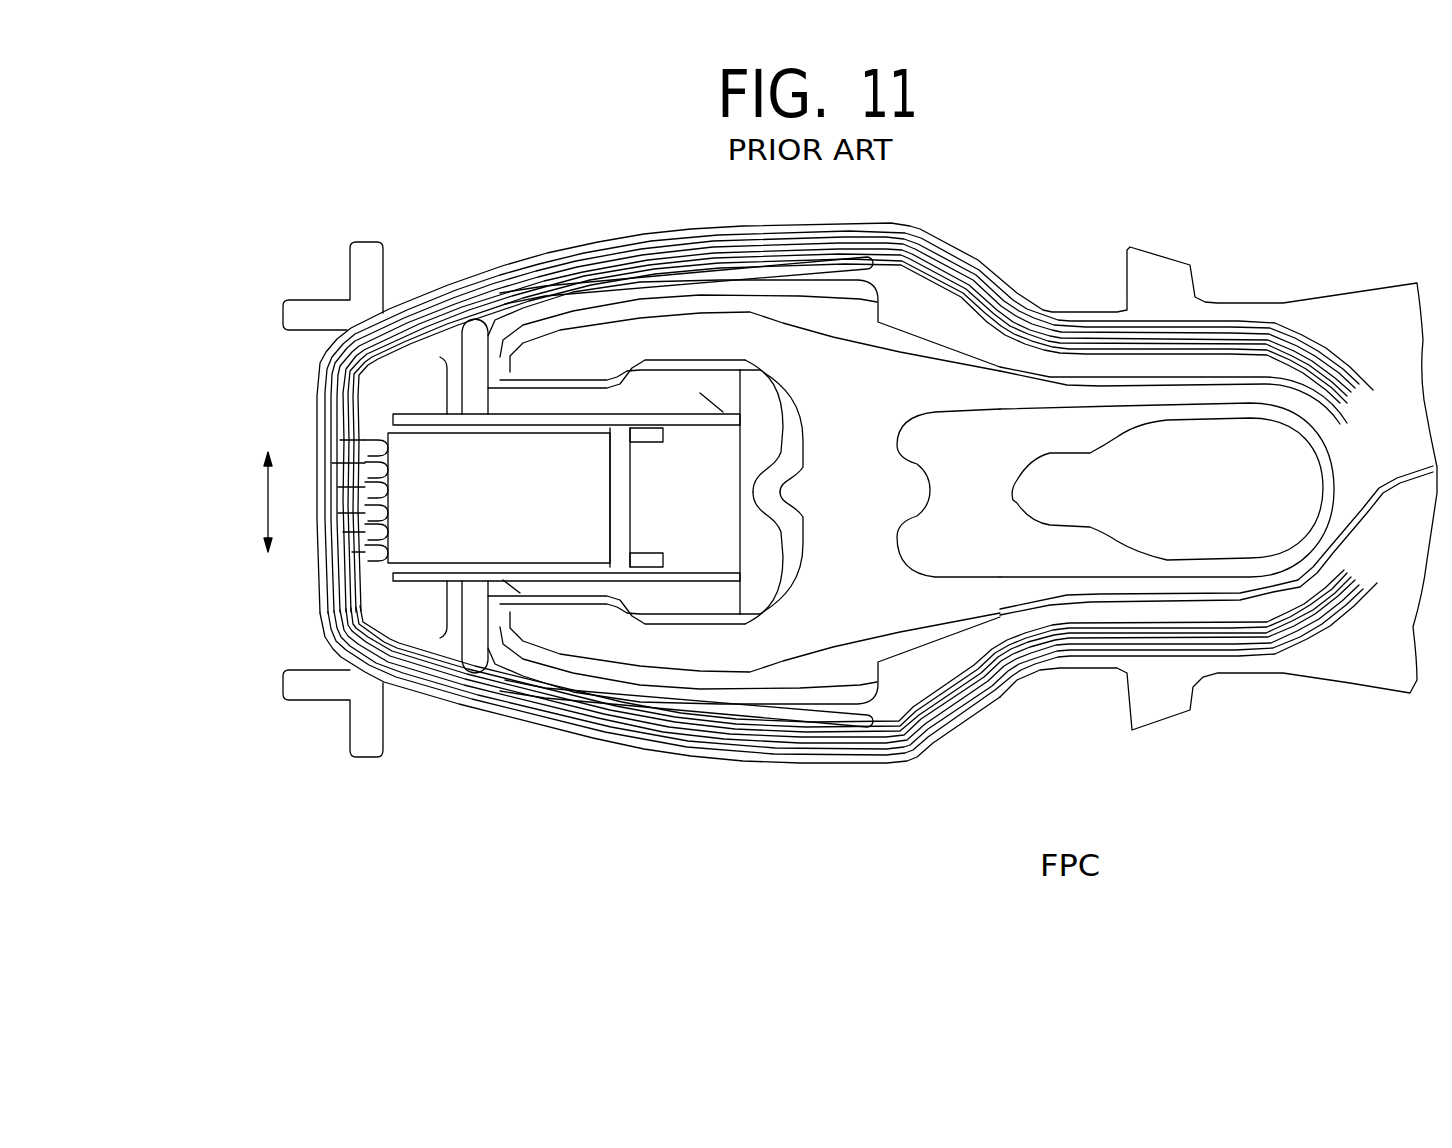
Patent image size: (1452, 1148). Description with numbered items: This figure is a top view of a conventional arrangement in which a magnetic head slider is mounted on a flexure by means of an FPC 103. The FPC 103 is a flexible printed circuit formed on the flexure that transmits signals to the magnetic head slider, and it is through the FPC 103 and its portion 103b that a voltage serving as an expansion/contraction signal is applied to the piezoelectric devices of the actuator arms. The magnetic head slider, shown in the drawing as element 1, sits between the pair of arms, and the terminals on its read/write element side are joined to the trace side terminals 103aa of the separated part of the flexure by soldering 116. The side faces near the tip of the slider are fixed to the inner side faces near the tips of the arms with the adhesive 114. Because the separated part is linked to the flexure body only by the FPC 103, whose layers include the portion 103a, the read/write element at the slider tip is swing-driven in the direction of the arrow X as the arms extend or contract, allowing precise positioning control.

The connector 1 is at (560, 538).
The FPC 103 is at (879, 581).
The FPC outer portion 103a is at (683, 765).
The FPC 103b is at (783, 722).
The trace side terminals 103aa is at (375, 445).
The adhesive 114 is at (390, 407).
The soldering 116 is at (360, 580).
The arrow X is at (268, 510).